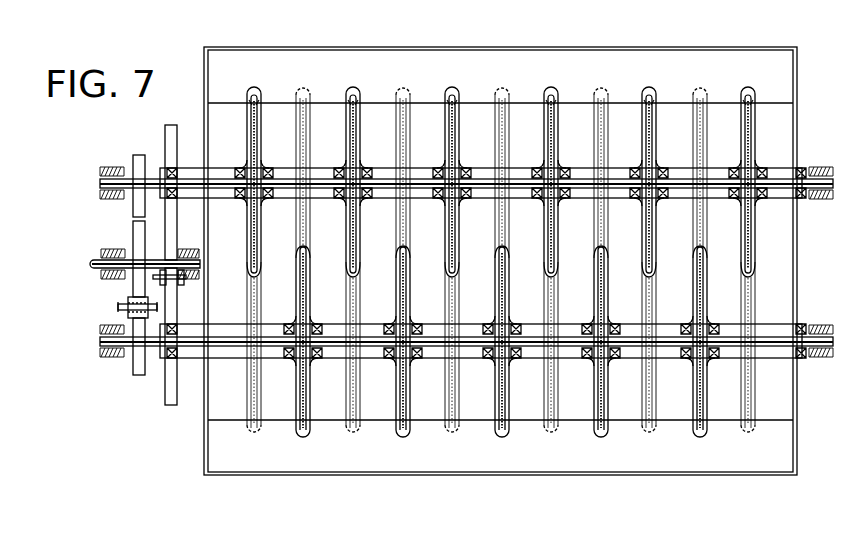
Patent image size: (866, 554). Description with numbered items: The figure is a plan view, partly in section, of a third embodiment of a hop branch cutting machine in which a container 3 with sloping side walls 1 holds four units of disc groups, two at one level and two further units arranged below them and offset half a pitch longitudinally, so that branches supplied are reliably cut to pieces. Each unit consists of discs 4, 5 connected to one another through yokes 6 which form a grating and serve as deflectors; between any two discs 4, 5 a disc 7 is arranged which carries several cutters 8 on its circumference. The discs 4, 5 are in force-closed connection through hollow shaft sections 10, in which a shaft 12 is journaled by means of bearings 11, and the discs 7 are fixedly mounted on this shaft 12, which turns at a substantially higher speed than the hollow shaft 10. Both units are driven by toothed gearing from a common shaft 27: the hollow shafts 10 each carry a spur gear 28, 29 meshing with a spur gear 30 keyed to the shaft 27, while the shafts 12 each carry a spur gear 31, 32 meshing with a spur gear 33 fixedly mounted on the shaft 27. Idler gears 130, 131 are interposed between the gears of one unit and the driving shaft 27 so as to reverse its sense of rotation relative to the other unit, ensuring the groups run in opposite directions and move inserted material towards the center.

The sloping side wall 1 is at (626, 428).
The container 3 is at (794, 78).
The disc 4 is at (248, 142).
The disc 5 is at (259, 141).
The yoke 6 is at (262, 92).
The disc 7 is at (257, 125).
The cutter 8 is at (250, 96).
The hollow shaft section 10 is at (229, 198).
The bearing 11 is at (367, 199).
The shaft 12 is at (292, 195).
The common shaft 27 is at (90, 264).
The spur gear 28 is at (172, 126).
The spur gear 29 is at (168, 392).
The spur gear 30 is at (186, 252).
The spur gear 31 is at (136, 356).
The spur gear 32 is at (136, 158).
The spur gear 33 is at (134, 228).
The idler gear 130 is at (165, 278).
The idler gear 131 is at (127, 309).